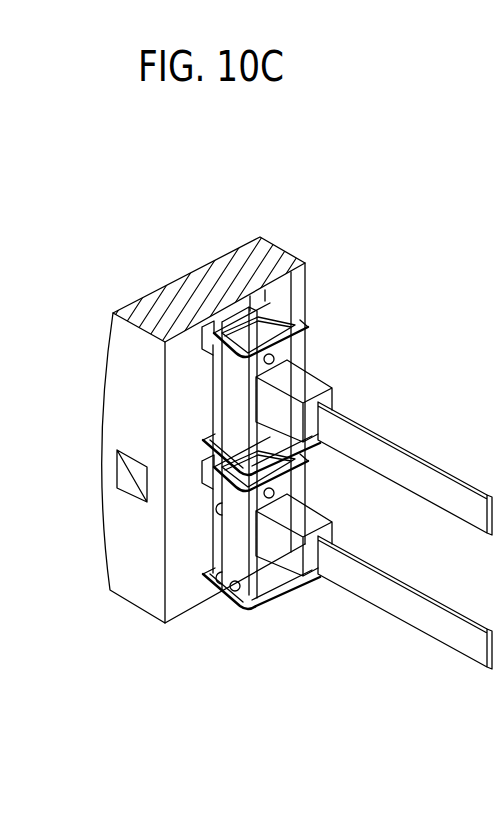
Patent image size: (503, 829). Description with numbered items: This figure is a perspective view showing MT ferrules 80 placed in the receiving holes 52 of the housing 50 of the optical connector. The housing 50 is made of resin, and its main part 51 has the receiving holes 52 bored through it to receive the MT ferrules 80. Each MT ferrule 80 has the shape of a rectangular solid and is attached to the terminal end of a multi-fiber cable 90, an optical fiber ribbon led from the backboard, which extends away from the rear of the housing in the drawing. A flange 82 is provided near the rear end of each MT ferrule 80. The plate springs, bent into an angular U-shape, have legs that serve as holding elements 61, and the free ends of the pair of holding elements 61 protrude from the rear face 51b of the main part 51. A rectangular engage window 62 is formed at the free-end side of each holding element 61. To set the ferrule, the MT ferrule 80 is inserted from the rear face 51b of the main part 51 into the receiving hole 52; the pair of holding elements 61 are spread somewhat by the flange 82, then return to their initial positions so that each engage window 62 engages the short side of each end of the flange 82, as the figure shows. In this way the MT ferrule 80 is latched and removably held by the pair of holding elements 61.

The housing 50 is at (226, 394).
The main part 51 is at (127, 393).
The rear face 51b is at (292, 298).
The receiving hole 52 is at (218, 515).
The holding element 61 is at (290, 475).
The engage window 62 is at (230, 593).
The MT ferrule 80 is at (218, 542).
The flange 82 is at (225, 575).
The multi-fiber cable 90 is at (447, 643).